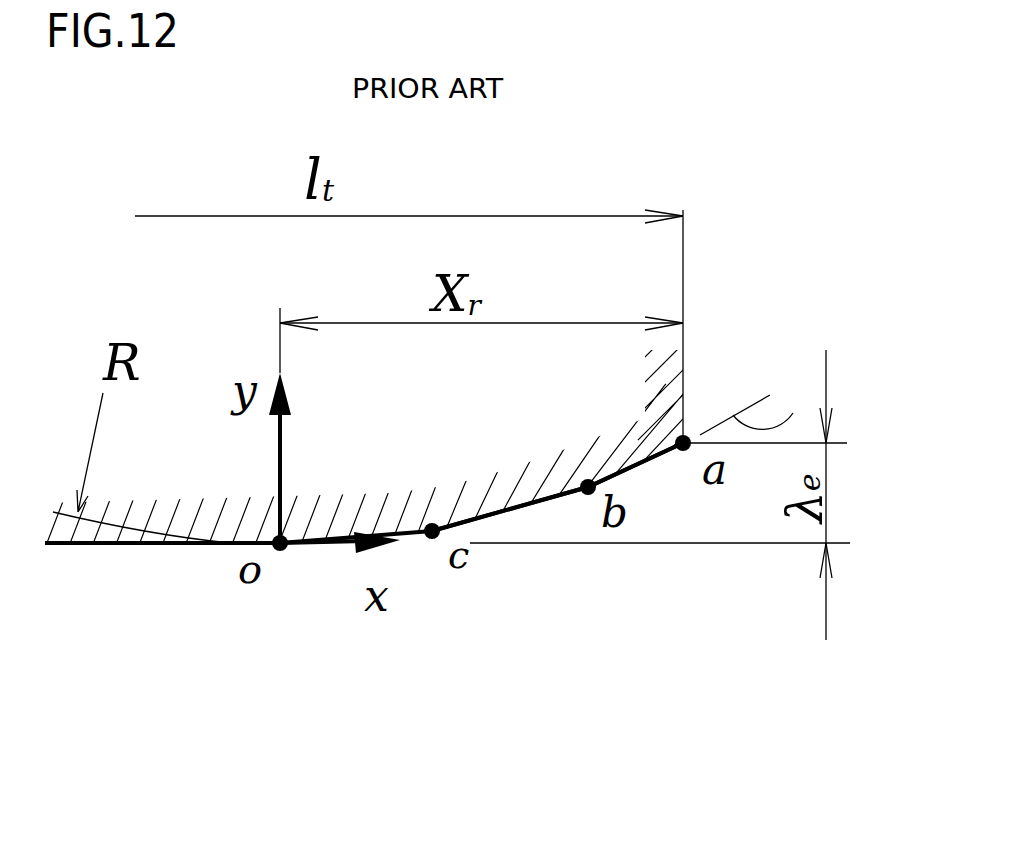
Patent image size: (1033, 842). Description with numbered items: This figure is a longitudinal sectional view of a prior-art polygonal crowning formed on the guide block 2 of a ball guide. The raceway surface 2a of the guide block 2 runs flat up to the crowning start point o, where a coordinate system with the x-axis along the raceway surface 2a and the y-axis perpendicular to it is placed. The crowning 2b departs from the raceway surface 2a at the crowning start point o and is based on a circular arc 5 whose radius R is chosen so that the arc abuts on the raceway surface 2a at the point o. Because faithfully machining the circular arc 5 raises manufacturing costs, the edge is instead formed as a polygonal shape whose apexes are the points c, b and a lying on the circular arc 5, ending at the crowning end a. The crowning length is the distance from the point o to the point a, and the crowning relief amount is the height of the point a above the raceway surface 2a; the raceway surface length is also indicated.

The guide block 2 is at (115, 595).
The raceway surface 2a is at (178, 547).
The crowning 2b is at (525, 505).
The circular arc 5 is at (802, 395).